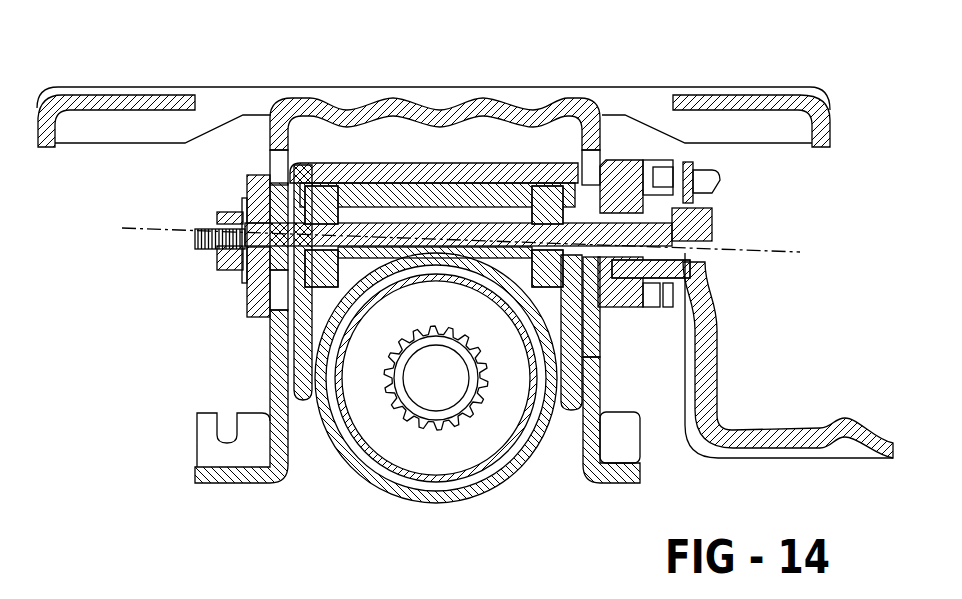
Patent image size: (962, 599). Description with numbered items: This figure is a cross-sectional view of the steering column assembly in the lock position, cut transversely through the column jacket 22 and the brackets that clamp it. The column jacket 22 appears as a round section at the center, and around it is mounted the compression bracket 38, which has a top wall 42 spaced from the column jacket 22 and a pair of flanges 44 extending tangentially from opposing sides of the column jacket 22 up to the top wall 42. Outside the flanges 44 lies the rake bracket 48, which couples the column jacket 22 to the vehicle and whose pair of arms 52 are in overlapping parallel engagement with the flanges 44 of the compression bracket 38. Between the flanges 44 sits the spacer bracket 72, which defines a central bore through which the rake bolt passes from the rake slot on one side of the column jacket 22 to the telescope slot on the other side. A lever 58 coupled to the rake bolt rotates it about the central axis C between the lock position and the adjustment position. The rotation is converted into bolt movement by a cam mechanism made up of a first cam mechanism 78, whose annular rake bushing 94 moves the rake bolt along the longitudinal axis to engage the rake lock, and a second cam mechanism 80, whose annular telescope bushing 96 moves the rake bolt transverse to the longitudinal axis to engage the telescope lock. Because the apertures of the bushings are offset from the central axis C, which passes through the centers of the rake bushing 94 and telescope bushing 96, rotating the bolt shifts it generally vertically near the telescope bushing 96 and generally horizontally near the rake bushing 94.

The column jacket 22 is at (505, 484).
The compression bracket 38 is at (600, 393).
The top wall 42 is at (453, 170).
The flanges 44 is at (288, 363).
The rake bracket 48 is at (508, 87).
The arms 52 is at (268, 353).
The lever 58 is at (821, 428).
The spacer bracket 72 is at (478, 214).
The first cam mechanism 78 is at (608, 161).
The second cam mechanism 80 is at (297, 163).
The rake bushing 94 is at (546, 200).
The telescope bushing 96 is at (268, 325).
The central axis C is at (757, 252).